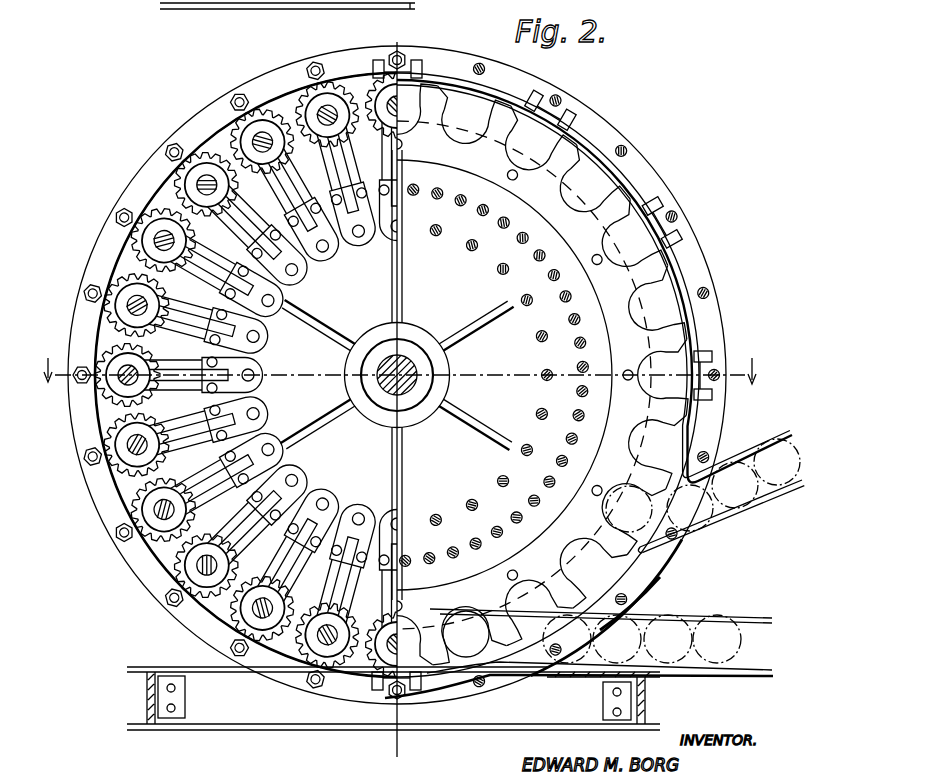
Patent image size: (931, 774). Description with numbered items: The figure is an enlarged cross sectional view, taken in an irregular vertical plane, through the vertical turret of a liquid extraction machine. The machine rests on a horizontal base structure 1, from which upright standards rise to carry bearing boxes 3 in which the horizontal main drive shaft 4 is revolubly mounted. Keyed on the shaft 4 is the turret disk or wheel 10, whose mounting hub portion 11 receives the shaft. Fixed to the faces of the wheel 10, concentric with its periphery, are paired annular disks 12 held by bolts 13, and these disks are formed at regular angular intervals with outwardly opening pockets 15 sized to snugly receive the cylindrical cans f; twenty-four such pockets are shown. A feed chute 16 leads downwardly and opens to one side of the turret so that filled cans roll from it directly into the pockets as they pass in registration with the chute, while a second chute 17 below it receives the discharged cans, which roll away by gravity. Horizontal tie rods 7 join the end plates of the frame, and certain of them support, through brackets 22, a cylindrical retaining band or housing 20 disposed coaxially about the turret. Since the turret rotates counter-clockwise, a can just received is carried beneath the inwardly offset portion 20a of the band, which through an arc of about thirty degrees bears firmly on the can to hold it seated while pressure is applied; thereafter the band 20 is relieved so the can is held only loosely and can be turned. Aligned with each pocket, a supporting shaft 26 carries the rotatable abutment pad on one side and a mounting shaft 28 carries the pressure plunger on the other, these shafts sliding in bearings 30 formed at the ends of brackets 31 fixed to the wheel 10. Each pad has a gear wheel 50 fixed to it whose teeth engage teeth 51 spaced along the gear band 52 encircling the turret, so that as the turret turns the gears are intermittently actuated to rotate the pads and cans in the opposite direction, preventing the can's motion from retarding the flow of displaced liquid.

The horizontal base structure 1 is at (232, 712).
The bearing boxes 3 is at (399, 374).
The main drive shaft 4 is at (384, 392).
The tie rods 7 is at (170, 147).
The turret disk or wheel 10 is at (540, 320).
The mounting hub portion 11 is at (412, 406).
The annular disks 12 is at (658, 283).
The bolts 13 is at (600, 258).
The pockets 15 is at (540, 146).
The feed chute 16 is at (728, 522).
The discharge chute 17 is at (702, 620).
The retaining band or housing 20 is at (670, 205).
The inwardly offset portion of the band 20a is at (698, 430).
The brackets 22 is at (556, 108).
The supporting shaft 26 is at (170, 598).
The mounting shaft 28 is at (157, 230).
The bearings 30 is at (120, 478).
The brackets 31 is at (300, 262).
The gear wheel 50 is at (137, 240).
The teeth 51 is at (107, 510).
The gear band 52 is at (137, 572).
The cans f is at (670, 560).